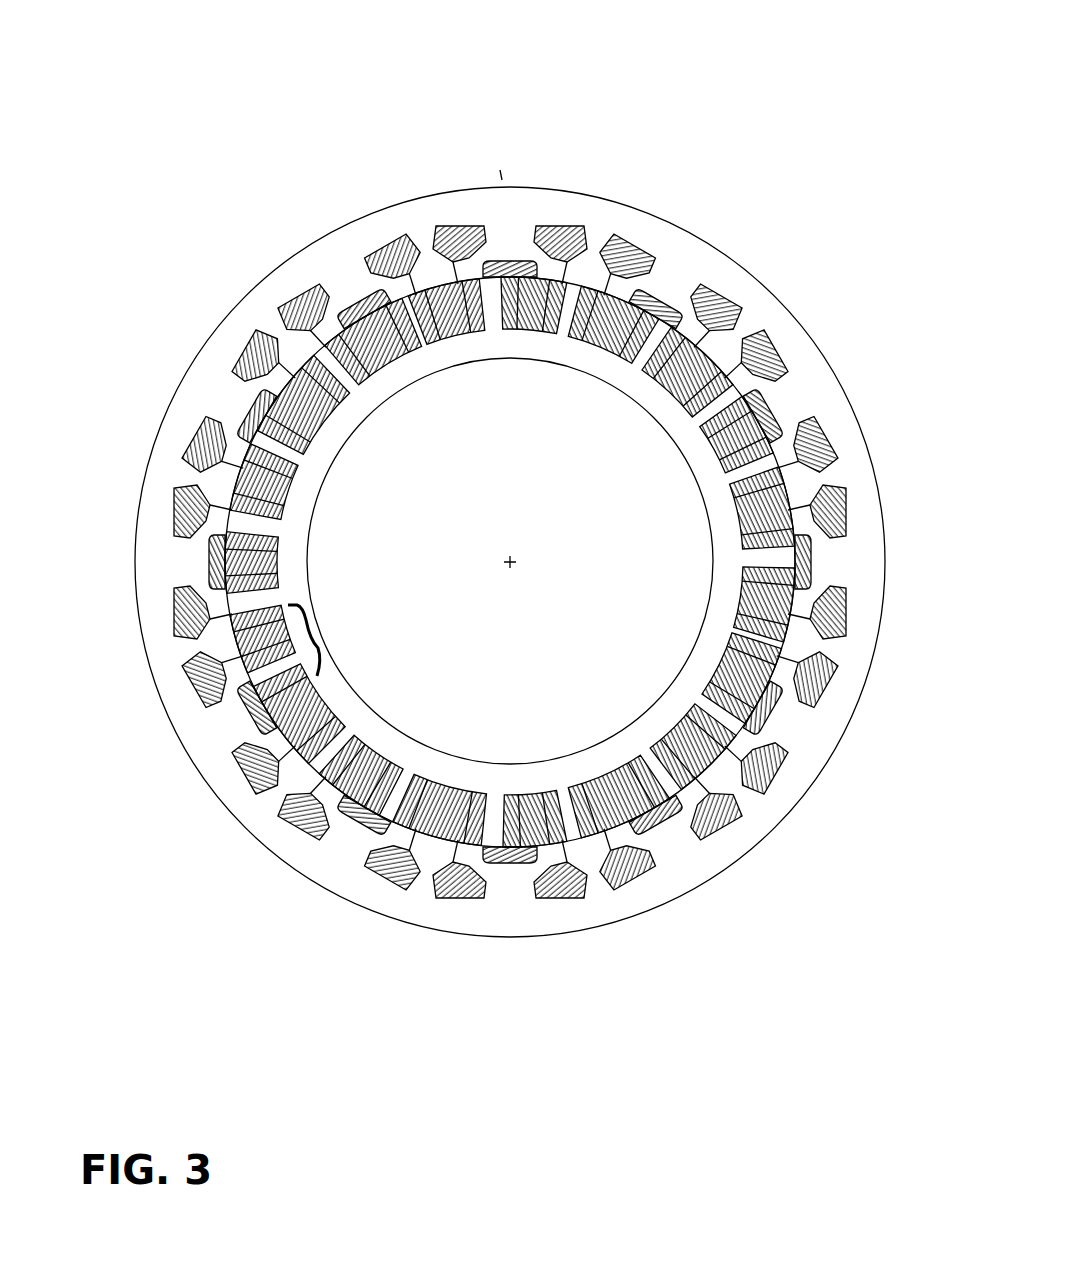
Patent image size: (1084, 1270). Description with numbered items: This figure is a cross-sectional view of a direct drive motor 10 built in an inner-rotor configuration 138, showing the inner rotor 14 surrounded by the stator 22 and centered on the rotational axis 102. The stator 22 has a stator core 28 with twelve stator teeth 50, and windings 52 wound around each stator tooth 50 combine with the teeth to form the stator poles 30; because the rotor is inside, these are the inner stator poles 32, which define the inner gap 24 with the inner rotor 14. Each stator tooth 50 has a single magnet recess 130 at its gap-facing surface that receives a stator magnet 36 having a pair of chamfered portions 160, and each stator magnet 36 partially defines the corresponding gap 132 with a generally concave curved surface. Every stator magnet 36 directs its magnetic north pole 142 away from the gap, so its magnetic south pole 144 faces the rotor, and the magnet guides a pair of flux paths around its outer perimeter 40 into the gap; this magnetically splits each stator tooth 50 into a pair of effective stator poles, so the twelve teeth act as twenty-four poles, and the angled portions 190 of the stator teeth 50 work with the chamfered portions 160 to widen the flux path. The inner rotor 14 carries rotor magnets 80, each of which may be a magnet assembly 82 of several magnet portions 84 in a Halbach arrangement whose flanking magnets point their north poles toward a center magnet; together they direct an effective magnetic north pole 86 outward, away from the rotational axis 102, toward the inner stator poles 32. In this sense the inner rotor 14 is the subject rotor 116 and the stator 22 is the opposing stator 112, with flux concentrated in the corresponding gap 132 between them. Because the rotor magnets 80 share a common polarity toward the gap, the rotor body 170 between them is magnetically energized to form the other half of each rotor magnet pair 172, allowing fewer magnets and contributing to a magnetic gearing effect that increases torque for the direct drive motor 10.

The direct drive motor 10 is at (708, 144).
The inner rotor 14 is at (592, 386).
The stator 22 is at (791, 268).
The inner gap 24 is at (287, 754).
The stator core 28 is at (860, 608).
The stator pole 30 is at (770, 725).
The inner stator poles 32 is at (218, 400).
The stator magnet 36 is at (772, 417).
The outer perimeter 40 is at (392, 812).
The stator tooth 50 is at (486, 258).
The windings 52 is at (563, 278).
The rotor magnet 80 is at (230, 560).
The magnet assembly 82 is at (735, 592).
The magnet portions 84 is at (730, 622).
The effective magnetic north pole 86 is at (645, 355).
The rotational axis 102 is at (513, 558).
The opposing stator 112 is at (310, 235).
The subject rotor 116 is at (318, 535).
The magnet recess 130 is at (240, 728).
The corresponding gap 132 is at (236, 470).
The inner-rotor configuration 138 is at (497, 128).
The magnetic north pole 142 is at (702, 410).
The magnetic south pole 144 is at (571, 320).
The chamfered portions 160 is at (548, 830).
The rotor body 170 is at (670, 813).
The rotor magnet pairs 172 is at (308, 638).
The angled portions 190 is at (557, 863).